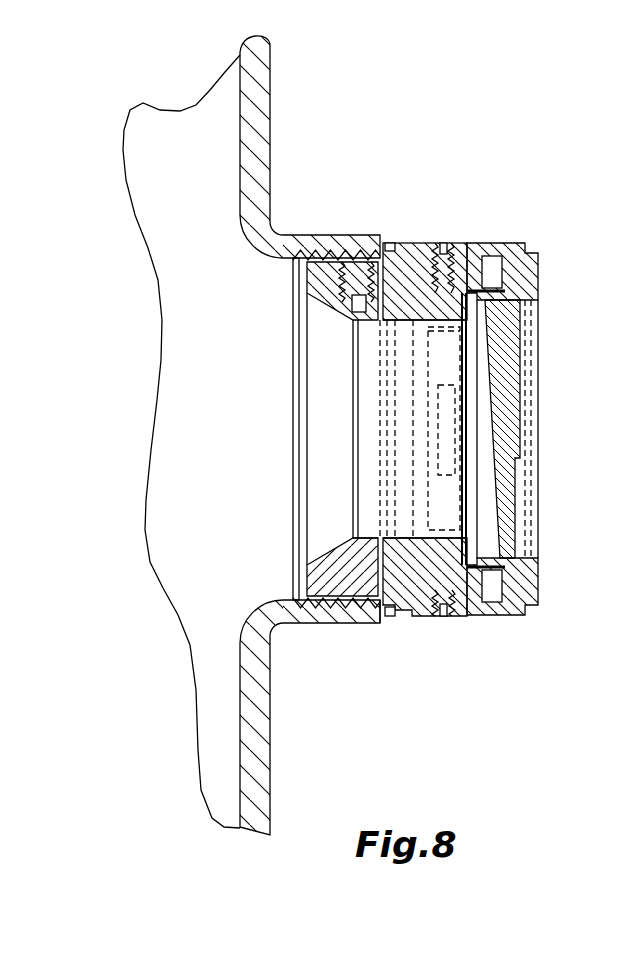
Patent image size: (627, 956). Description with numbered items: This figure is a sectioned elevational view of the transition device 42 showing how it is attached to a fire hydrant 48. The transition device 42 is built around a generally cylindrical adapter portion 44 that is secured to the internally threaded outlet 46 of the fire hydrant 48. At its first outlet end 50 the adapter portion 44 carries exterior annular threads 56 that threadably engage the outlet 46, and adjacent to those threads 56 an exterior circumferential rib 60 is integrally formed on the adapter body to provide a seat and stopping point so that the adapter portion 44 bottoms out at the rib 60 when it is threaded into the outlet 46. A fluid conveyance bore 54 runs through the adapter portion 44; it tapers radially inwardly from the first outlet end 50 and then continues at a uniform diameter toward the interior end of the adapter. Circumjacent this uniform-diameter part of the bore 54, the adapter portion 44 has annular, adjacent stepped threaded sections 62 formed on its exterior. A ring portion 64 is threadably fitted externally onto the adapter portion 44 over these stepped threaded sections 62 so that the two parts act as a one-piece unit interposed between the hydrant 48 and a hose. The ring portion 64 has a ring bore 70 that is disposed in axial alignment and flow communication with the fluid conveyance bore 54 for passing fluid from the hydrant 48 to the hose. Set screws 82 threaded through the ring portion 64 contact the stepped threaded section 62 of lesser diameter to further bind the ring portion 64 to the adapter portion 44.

The transition device 42 is at (421, 233).
The adapter portion 44 is at (388, 620).
The outlet 46 is at (331, 625).
The fire hydrant 48 is at (272, 115).
The first outlet end 50 is at (300, 318).
The fluid conveyance bore 54 is at (327, 420).
The exterior annular threads 56 is at (333, 598).
The circumferential rib 60 is at (387, 242).
The stepped threaded sections 62 is at (365, 537).
The ring portion 64 is at (460, 243).
The ring bore 70 is at (410, 372).
The set screws 82 is at (443, 243).